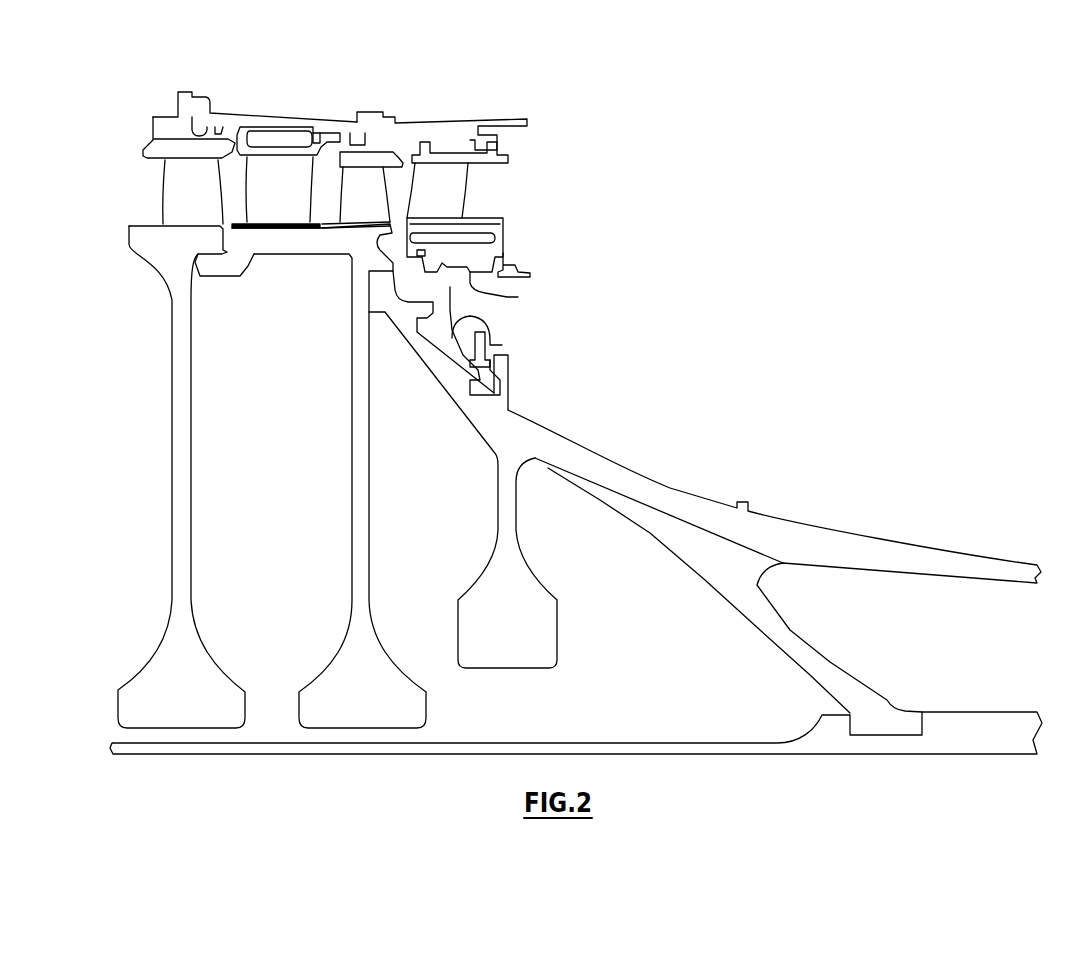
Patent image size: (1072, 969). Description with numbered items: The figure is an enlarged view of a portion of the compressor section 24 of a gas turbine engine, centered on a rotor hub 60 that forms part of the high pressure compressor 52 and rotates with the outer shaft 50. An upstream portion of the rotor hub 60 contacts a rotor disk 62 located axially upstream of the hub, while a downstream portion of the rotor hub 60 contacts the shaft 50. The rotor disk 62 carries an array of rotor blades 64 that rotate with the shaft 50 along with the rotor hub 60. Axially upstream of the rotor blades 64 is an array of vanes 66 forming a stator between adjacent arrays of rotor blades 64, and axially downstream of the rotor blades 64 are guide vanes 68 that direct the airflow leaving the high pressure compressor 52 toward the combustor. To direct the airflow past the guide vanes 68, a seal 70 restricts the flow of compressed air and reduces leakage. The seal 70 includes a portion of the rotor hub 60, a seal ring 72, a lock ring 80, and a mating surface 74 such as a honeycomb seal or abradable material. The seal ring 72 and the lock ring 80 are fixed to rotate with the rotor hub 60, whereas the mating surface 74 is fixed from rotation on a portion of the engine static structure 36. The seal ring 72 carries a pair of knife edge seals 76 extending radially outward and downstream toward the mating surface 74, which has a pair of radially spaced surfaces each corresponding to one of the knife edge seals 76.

The compressor section 24 is at (157, 78).
The high pressure compressor 52 is at (364, 83).
The guide vanes 68 is at (513, 191).
The mating surface 74 is at (480, 260).
The engine static structure 36 is at (524, 275).
The knife edge seals 76 is at (421, 252).
The seal 70 is at (501, 308).
The seal ring 72 is at (494, 338).
The lock ring 80 is at (510, 362).
The vanes 66 is at (280, 227).
The rotor blades 64 is at (355, 231).
The rotor disk 62 is at (372, 483).
The rotor hub 60 is at (667, 492).
The outer shaft 50 is at (618, 755).